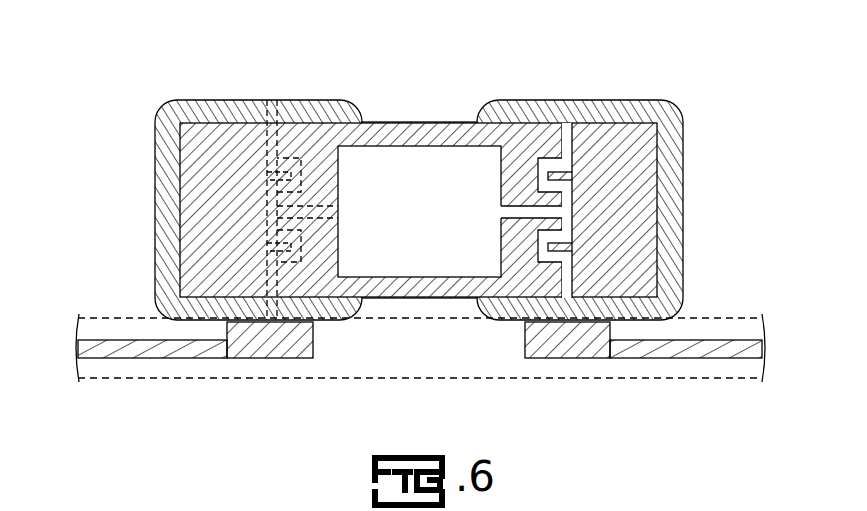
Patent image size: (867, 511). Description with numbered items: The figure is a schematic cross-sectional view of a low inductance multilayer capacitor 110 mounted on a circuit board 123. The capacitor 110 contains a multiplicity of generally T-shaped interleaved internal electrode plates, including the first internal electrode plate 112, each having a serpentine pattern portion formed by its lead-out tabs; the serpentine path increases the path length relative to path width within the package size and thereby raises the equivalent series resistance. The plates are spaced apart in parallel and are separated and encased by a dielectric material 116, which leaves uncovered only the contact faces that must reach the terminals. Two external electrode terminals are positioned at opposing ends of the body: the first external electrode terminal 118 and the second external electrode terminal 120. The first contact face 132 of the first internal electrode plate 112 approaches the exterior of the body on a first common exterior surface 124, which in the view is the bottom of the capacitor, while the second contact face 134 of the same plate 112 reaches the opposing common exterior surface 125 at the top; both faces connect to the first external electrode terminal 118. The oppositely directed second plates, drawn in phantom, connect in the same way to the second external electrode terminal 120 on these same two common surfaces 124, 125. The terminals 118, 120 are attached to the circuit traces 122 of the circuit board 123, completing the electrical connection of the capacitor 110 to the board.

The capacitor 110 is at (422, 213).
The first internal electrode plate 112 is at (466, 243).
The dielectric material 116 is at (391, 122).
The first external electrode terminal 118 is at (668, 122).
The second external electrode terminal 120 is at (158, 135).
The circuit traces 122 is at (290, 330).
The circuit board 123 is at (385, 345).
The first common exterior surface 124 is at (424, 304).
The opposing common exterior surface 125 is at (459, 113).
The first contact face 132 is at (563, 298).
The second contact face 134 is at (567, 126).